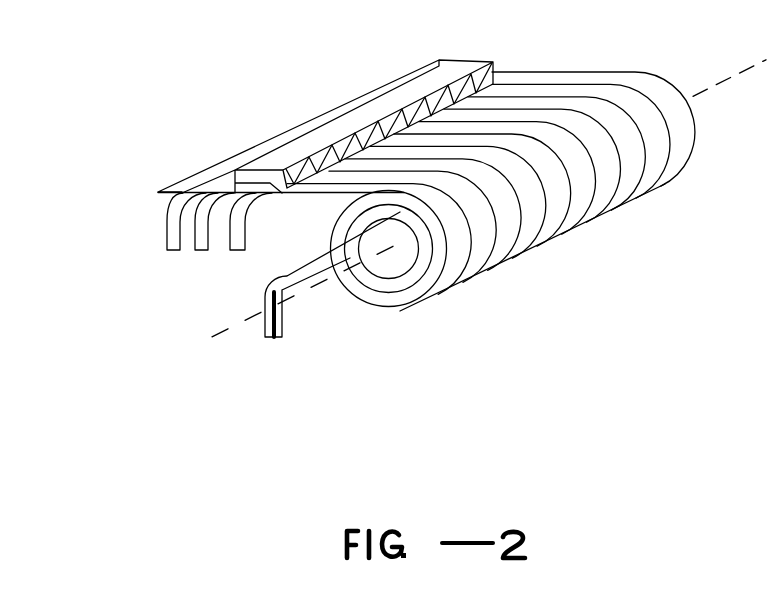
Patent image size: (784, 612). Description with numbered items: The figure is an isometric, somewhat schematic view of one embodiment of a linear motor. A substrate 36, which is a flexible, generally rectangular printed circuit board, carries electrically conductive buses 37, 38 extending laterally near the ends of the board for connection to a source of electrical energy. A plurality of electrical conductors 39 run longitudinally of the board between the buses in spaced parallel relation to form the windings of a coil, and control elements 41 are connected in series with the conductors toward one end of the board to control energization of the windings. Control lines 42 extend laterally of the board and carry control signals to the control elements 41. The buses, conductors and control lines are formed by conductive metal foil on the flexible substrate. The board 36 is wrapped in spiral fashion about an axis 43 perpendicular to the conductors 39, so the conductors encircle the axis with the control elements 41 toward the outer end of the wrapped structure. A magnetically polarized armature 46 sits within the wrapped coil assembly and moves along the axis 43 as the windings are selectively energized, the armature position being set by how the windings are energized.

The substrate 36 is at (540, 90).
The electrically conductive bus 37 is at (176, 233).
The electrically conductive bus 38 is at (280, 323).
The electrical conductors 39 is at (545, 220).
The control elements 41 is at (456, 70).
The control lines 42 is at (208, 245).
The axis 43 is at (720, 88).
The magnetically polarized armature 46 is at (397, 262).